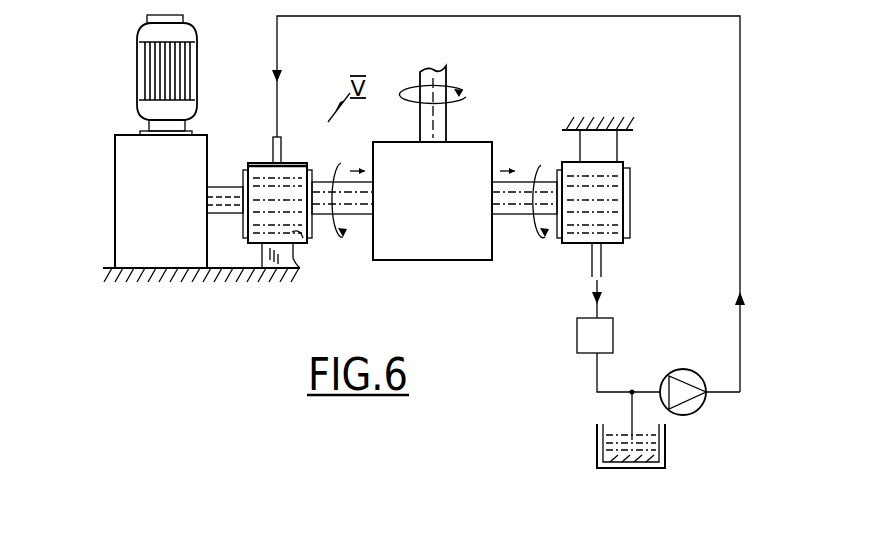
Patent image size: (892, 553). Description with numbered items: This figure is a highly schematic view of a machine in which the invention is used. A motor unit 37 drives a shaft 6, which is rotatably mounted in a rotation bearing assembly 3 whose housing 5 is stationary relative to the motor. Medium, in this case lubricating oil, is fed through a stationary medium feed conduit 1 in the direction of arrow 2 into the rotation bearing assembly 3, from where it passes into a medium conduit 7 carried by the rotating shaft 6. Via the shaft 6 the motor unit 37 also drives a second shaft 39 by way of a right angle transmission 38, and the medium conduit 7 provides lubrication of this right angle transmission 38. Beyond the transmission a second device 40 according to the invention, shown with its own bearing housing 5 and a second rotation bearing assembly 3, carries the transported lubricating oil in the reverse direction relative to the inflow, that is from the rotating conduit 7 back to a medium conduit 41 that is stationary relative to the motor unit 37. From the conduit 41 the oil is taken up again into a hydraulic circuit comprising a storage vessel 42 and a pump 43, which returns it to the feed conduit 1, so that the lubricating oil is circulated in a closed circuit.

The medium feed conduit 1 is at (283, 150).
The arrow 2 is at (279, 78).
The rotation bearing assembly 3 is at (457, 182).
The housing 5 is at (298, 250).
The shaft 6 is at (360, 205).
The medium conduit 7 is at (328, 165).
The motor unit 37 is at (124, 162).
The right angle transmission 38 is at (423, 250).
The second shaft 39 is at (448, 78).
The second device 40 is at (608, 182).
The medium conduit 41 is at (590, 262).
The storage vessel 42 is at (600, 440).
The pump 43 is at (690, 370).